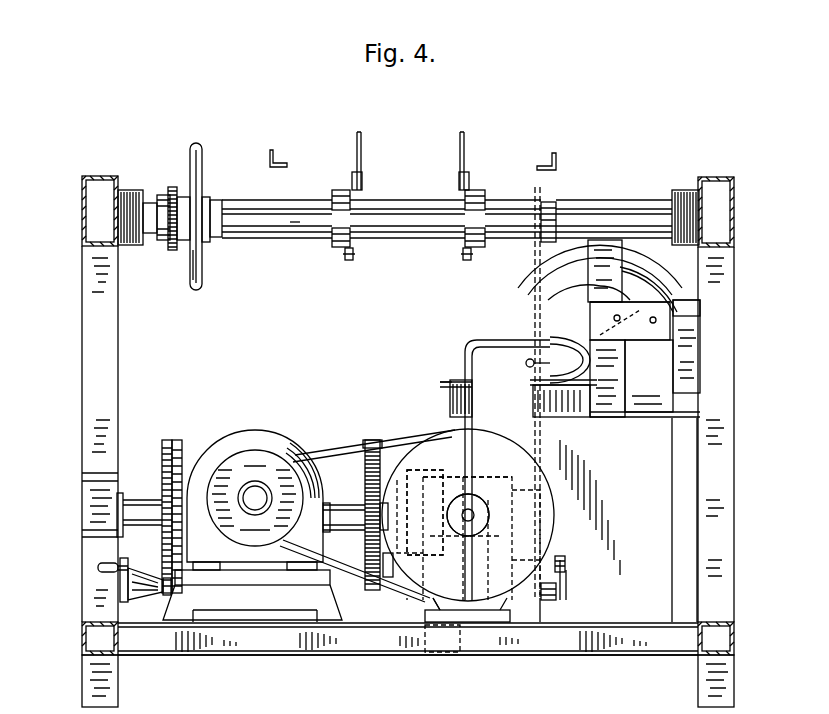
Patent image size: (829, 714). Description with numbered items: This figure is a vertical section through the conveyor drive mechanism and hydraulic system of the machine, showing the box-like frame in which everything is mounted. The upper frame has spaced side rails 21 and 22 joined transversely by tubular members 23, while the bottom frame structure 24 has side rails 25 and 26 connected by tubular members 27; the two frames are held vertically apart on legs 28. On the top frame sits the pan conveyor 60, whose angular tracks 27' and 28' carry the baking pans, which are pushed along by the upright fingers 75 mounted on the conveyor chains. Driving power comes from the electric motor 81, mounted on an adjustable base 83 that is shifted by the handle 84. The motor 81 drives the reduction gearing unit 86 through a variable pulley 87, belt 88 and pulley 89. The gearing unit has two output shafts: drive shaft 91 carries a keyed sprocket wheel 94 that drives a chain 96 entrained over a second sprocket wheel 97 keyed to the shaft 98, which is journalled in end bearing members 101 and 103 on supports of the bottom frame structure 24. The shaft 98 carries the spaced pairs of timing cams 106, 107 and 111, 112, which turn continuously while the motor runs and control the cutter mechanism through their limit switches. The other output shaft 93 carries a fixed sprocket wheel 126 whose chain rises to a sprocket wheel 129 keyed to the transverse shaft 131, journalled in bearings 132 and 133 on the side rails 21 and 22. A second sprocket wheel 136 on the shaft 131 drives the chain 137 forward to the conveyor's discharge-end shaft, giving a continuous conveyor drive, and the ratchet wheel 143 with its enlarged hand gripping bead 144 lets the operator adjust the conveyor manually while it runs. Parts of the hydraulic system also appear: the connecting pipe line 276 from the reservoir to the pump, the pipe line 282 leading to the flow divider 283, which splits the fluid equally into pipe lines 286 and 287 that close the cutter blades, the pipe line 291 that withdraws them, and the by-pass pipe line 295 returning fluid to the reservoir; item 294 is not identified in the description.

The side rail 21 is at (98, 206).
The side rail 22 is at (717, 200).
The tubular member 23 is at (600, 200).
The bottom frame structure 24 is at (225, 669).
The side rail 25 is at (92, 641).
The side rail 26 is at (718, 639).
The tubular member 27 is at (408, 662).
The leg 28 is at (378, 682).
The angular track 27' is at (295, 132).
The angular track 28' is at (533, 137).
The pan conveyor 60 is at (351, 271).
The upright finger 75 is at (460, 138).
The electric motor 81 is at (243, 440).
The adjustable base 83 is at (265, 586).
The handle 84 is at (105, 569).
The reduction gearing unit 86 is at (482, 491).
The variable pulley 87 is at (263, 468).
The belt 88 is at (337, 452).
The pulley 89 is at (553, 492).
The drive shaft 91 is at (335, 562).
The drive shaft 93 is at (565, 566).
The sprocket wheel 94 is at (388, 577).
The chain 96 is at (378, 540).
The sprocket wheel 97 is at (416, 466).
The shaft 98 is at (338, 510).
The end bearing member 101 is at (100, 495).
The end bearing member 103 is at (462, 476).
The timing cam 106 is at (383, 444).
The timing cam 107 is at (370, 445).
The timing cam 111 is at (177, 460).
The timing cam 112 is at (167, 460).
The sprocket wheel 126 is at (550, 590).
The sprocket wheel 129 is at (548, 202).
The shaft 131 is at (298, 225).
The bearing 132 is at (140, 190).
The bearing 133 is at (677, 190).
The sprocket wheel 136 is at (165, 196).
The chain 137 is at (173, 240).
The wheel 143 is at (206, 278).
The hand gripping bead 144 is at (198, 152).
The connecting pipe line 276 is at (470, 342).
The pipe line 282 is at (645, 378).
The flow divider 283 is at (690, 345).
The pipe line 286 is at (618, 316).
The pipe line 287 is at (677, 316).
The pipe line 291 is at (663, 301).
The pipe 294 is at (495, 388).
The by-pass pipe line 295 is at (545, 365).